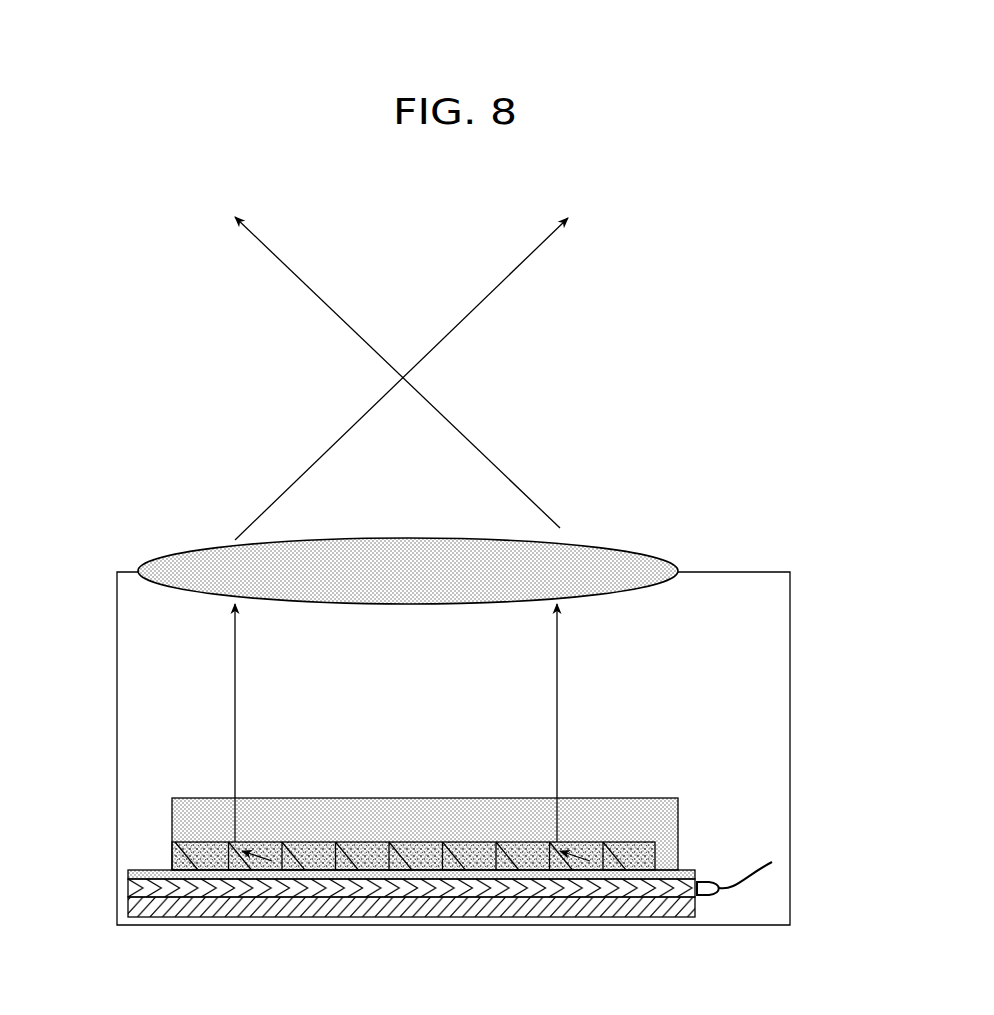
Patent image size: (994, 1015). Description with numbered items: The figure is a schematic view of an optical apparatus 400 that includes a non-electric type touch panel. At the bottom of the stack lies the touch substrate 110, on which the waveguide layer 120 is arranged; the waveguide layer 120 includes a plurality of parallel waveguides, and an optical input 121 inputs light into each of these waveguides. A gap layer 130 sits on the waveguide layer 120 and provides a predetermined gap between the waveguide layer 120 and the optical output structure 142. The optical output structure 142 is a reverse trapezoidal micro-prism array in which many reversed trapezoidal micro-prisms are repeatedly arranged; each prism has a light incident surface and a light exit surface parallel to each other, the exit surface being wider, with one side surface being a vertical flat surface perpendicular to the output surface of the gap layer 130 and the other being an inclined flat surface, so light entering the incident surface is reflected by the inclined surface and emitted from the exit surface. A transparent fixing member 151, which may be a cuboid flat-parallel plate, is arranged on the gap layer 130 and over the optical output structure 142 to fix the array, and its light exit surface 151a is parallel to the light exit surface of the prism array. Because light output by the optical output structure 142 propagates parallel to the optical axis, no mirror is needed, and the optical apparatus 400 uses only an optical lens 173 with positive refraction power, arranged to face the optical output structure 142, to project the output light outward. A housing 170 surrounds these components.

The touch substrate 110 is at (546, 903).
The waveguide layer 120 is at (395, 888).
The optical input 121 is at (706, 896).
The gap layer 130 is at (264, 875).
The optical output structure 142 is at (648, 851).
The fixing member 151 is at (660, 797).
The light exit surface 151a is at (172, 798).
The housing 170 is at (790, 641).
The optical lens 173 is at (617, 546).
The optical apparatus 400 is at (802, 754).